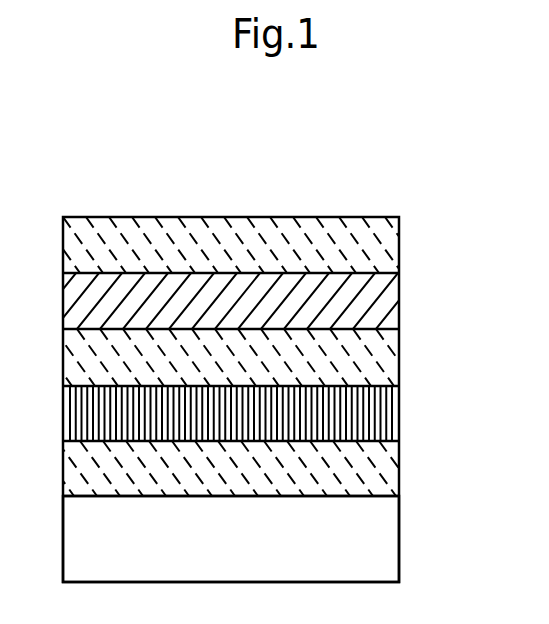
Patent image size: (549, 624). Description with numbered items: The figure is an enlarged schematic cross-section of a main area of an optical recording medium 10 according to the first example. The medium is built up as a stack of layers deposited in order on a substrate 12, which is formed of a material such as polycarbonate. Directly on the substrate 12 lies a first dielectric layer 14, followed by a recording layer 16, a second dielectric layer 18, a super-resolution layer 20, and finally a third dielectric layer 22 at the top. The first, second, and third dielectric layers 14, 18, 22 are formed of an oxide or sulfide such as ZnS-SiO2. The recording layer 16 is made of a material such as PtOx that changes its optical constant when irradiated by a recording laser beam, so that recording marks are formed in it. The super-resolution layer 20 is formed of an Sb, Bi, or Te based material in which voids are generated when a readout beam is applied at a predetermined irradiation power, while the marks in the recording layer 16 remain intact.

The optical recording medium 10 is at (290, 200).
The substrate 12 is at (390, 535).
The first dielectric layer 14 is at (390, 465).
The recording layer 16 is at (388, 405).
The second dielectric layer 18 is at (383, 352).
The super-resolution layer 20 is at (392, 295).
The third dielectric layer 22 is at (392, 235).